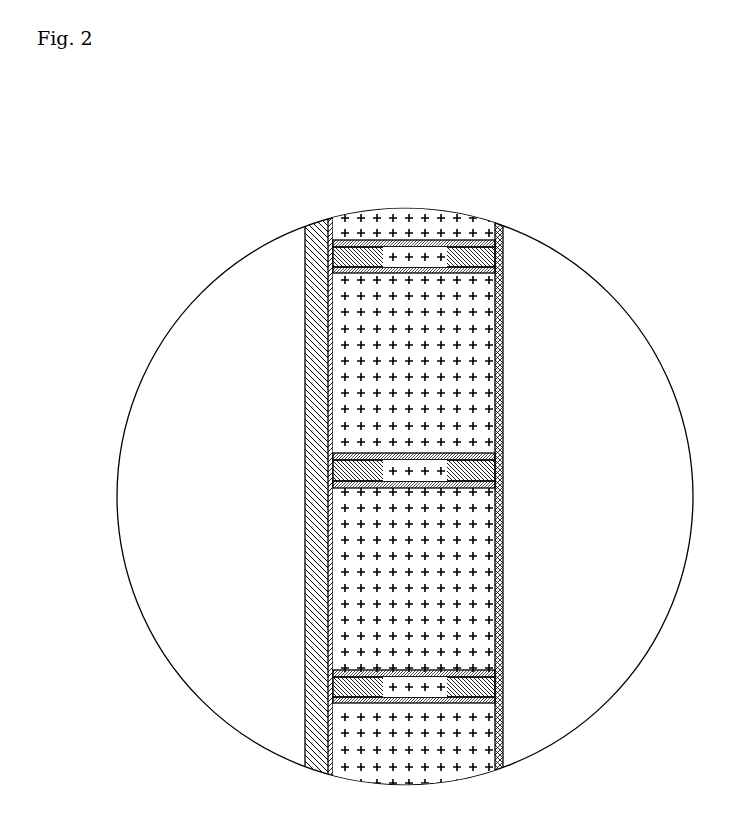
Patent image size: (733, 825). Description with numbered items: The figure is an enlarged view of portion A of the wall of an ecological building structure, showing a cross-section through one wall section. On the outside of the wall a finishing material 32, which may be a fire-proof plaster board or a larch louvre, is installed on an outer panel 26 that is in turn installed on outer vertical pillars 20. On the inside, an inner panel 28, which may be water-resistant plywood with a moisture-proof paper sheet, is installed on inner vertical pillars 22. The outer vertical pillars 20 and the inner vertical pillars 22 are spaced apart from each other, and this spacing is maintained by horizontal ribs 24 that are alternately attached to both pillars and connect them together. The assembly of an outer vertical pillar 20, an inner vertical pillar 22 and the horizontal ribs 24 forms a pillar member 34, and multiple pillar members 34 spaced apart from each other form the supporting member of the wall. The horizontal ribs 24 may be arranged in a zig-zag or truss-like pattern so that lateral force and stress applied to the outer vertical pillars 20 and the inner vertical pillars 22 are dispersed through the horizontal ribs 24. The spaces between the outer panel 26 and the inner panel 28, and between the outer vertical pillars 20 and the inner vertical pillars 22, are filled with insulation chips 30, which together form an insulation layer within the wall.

The outer vertical pillar 20 is at (343, 245).
The inner vertical pillar 22 is at (472, 252).
The horizontal rib 24 is at (400, 265).
The outer panel 26 is at (327, 315).
The inner panel 28 is at (497, 390).
The insulation chips 30 is at (443, 362).
The finishing material 32 is at (315, 455).
The pillar member 34 is at (411, 176).
The portion A is at (242, 733).